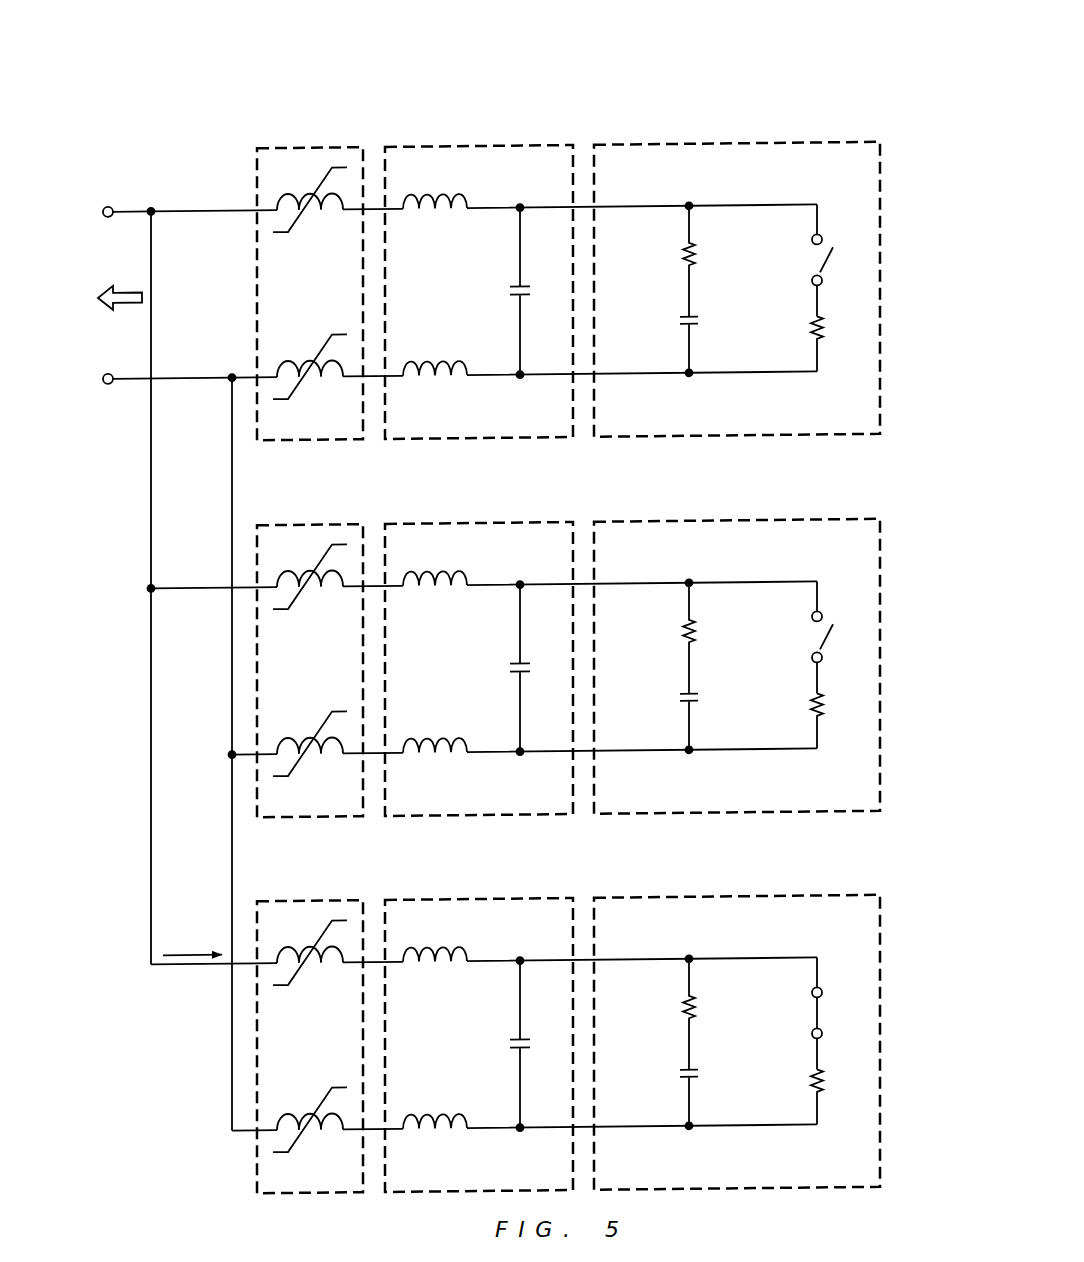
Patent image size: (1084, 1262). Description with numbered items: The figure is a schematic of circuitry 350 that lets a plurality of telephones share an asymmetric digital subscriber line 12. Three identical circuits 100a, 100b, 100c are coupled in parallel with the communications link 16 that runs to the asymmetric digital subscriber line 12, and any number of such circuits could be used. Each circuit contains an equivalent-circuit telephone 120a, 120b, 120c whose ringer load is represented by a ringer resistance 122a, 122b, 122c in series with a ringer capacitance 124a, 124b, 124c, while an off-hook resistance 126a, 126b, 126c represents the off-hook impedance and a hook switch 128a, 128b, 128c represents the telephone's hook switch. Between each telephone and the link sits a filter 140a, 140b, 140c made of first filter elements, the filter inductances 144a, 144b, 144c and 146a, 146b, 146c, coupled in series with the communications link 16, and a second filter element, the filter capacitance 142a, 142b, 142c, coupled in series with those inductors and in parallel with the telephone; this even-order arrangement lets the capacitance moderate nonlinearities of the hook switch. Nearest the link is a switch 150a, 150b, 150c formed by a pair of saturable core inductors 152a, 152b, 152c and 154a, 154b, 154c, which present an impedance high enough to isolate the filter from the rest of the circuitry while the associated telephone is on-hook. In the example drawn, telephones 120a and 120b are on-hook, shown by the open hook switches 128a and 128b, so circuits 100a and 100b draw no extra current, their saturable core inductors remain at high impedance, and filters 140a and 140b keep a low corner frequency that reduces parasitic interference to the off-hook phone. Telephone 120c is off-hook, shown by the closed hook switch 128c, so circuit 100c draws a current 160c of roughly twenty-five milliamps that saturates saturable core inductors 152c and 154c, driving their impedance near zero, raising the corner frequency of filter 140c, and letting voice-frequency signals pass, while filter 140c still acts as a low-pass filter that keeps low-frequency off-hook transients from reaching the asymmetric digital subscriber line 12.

The asymmetric digital subscriber line 12 is at (106, 300).
The communications link 16 is at (130, 211).
The circuitry 350 is at (360, 73).
The circuit 100a is at (867, 131).
The circuit 100b is at (536, 633).
The circuit 100c is at (536, 1009).
The telephone 120a is at (762, 192).
The telephone 120b is at (737, 666).
The telephone 120c is at (737, 1042).
The ringer resistance 122a is at (683, 262).
The ringer resistance 122b is at (666, 638).
The ringer resistance 122c is at (666, 1014).
The ringer capacitance 124a is at (680, 325).
The ringer capacitance 124b is at (667, 714).
The ringer capacitance 124c is at (667, 1090).
The off-hook resistance 126a is at (813, 336).
The off-hook resistance 126b is at (799, 718).
The off-hook resistance 126c is at (799, 1094).
The hook switch 128a is at (812, 267).
The hook switch 128b is at (783, 637).
The hook switch 128c is at (777, 1013).
The filter 140a is at (545, 191).
The filter 140b is at (479, 669).
The filter 140c is at (479, 1045).
The filter capacitance 142a is at (512, 297).
The filter capacitance 142b is at (496, 668).
The filter capacitance 142c is at (496, 1044).
The filter inductance 144a is at (446, 219).
The filter inductance 144b is at (449, 589).
The filter inductance 144c is at (449, 965).
The filter inductance 146a is at (446, 386).
The filter inductance 146b is at (449, 756).
The filter inductance 146c is at (449, 1132).
The switch 150a is at (353, 428).
The switch 150b is at (310, 670).
The switch 150c is at (272, 1047).
The saturable core inductor 152a is at (313, 221).
The saturable core inductor 152b is at (314, 596).
The saturable core inductor 152c is at (314, 972).
The saturable core inductor 154a is at (308, 352).
The saturable core inductor 154b is at (307, 723).
The saturable core inductor 154c is at (307, 1099).
The current 160c is at (189, 919).